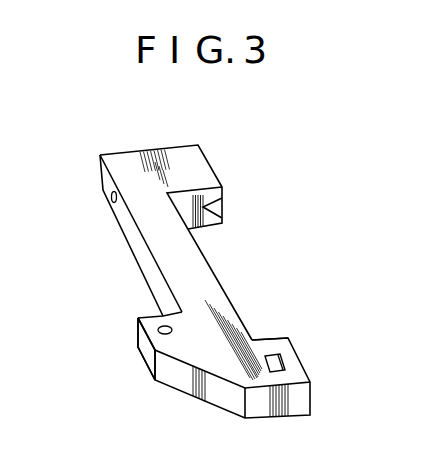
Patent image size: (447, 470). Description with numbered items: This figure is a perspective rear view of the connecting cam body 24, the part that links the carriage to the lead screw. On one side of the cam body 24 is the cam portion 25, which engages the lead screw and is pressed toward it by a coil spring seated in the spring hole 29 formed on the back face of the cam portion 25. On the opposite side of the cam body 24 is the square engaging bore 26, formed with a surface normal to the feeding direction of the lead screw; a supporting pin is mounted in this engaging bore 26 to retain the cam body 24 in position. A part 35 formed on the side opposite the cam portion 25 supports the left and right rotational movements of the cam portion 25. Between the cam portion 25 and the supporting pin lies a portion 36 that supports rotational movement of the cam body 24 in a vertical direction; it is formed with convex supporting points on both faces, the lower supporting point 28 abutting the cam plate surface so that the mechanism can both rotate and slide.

The connecting cam body 24 is at (203, 403).
The cam portion 25 is at (223, 203).
The square engaging bore 26 is at (286, 362).
The lower supporting point 28 is at (161, 327).
The spring hole 29 is at (111, 199).
The part 35 is at (292, 348).
The portion 36 is at (143, 357).